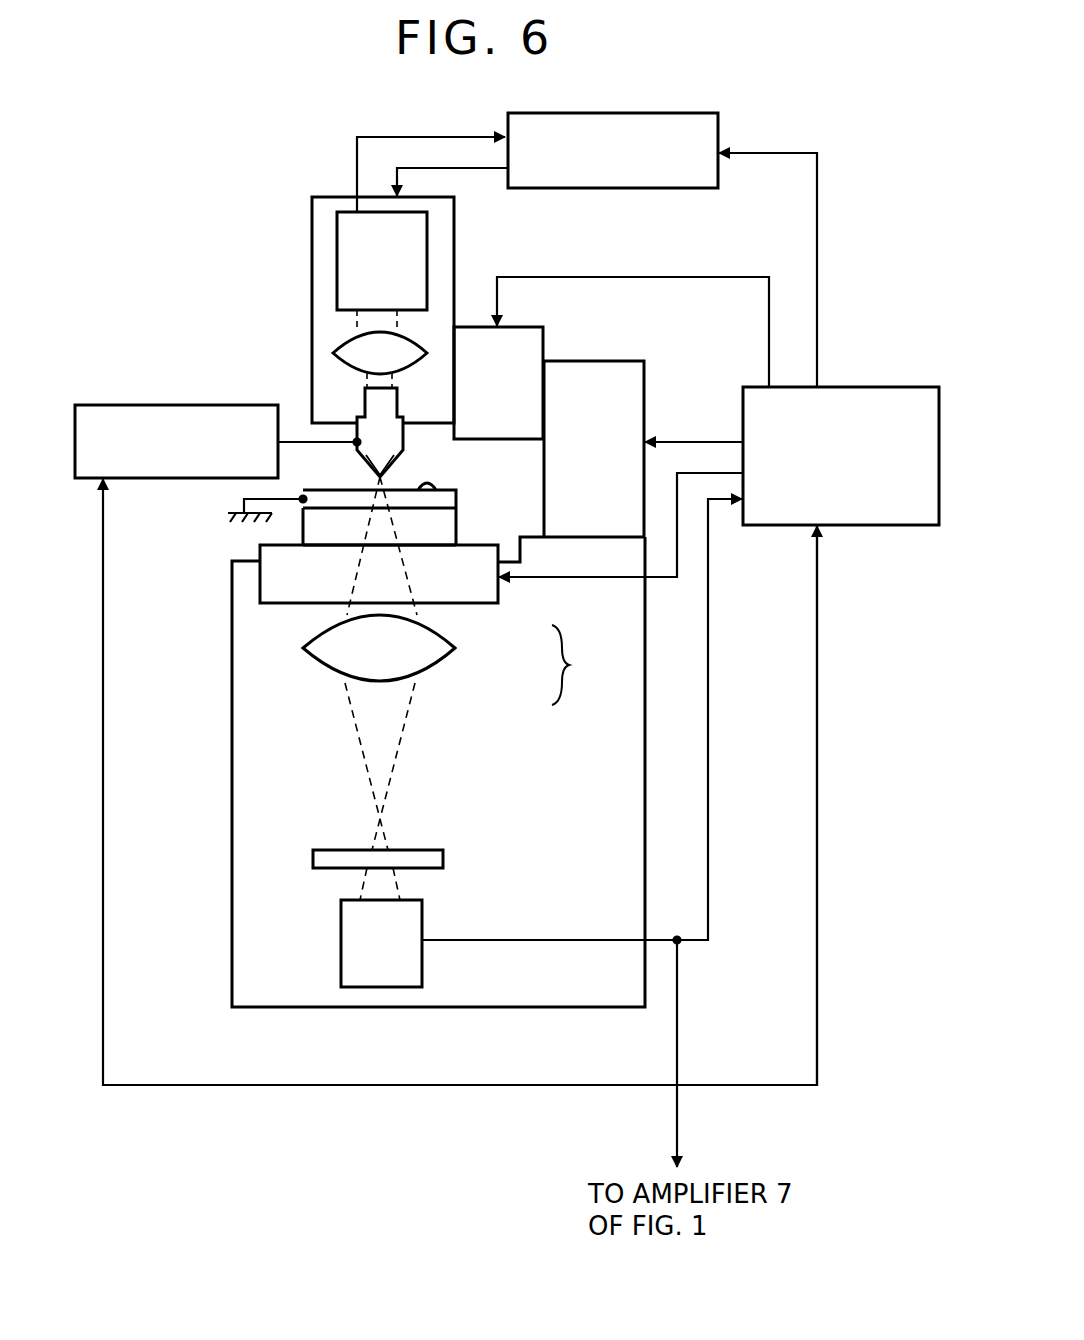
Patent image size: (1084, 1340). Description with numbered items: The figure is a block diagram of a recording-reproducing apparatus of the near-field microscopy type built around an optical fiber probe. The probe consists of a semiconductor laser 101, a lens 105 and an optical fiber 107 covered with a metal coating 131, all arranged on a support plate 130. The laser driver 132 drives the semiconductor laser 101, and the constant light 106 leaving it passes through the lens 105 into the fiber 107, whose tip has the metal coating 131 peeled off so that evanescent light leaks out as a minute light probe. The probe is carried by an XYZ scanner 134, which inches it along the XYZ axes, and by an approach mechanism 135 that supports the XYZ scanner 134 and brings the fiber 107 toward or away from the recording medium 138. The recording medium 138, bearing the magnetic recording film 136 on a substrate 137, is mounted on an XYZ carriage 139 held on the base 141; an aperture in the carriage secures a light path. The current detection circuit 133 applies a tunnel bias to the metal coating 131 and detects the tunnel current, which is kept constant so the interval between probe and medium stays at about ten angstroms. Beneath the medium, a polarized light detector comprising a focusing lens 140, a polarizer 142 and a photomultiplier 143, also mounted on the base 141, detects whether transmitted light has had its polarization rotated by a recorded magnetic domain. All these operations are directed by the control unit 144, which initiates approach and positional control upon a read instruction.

The semiconductor laser 101 is at (345, 222).
The lens 105 is at (345, 350).
The constant light 106 is at (362, 318).
The optical fiber 107 is at (365, 408).
The support plate 130 is at (442, 250).
The metal coating 131 is at (366, 460).
The laser driver 132 is at (683, 113).
The current detection circuit 133 is at (167, 405).
The XYZ scanner 134 is at (517, 327).
The approach mechanism 135 is at (603, 361).
The magnetic recording film 136 is at (447, 500).
The sample 137 is at (433, 532).
The recording medium 138 is at (593, 665).
The XYZ carriage 139 is at (280, 588).
The focusing lens 140 is at (328, 657).
The base 141 is at (253, 870).
The polarizer 142 is at (323, 862).
The photomultiplier 143 is at (422, 925).
The control unit 144 is at (857, 393).